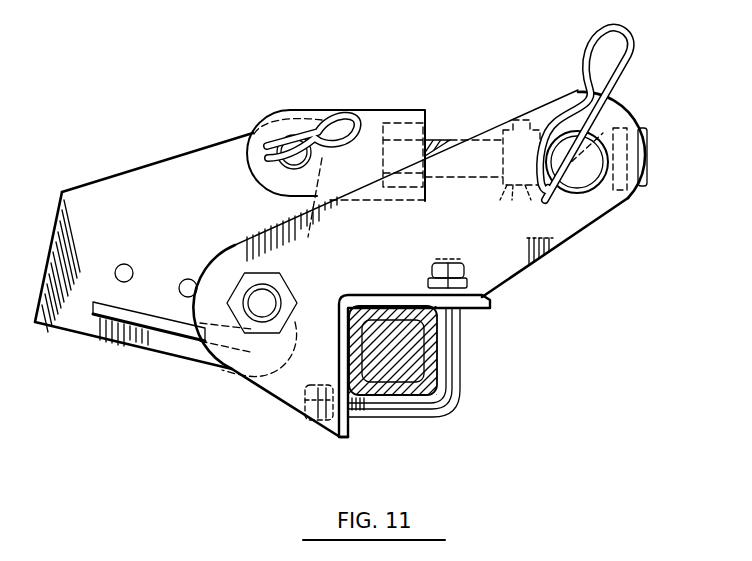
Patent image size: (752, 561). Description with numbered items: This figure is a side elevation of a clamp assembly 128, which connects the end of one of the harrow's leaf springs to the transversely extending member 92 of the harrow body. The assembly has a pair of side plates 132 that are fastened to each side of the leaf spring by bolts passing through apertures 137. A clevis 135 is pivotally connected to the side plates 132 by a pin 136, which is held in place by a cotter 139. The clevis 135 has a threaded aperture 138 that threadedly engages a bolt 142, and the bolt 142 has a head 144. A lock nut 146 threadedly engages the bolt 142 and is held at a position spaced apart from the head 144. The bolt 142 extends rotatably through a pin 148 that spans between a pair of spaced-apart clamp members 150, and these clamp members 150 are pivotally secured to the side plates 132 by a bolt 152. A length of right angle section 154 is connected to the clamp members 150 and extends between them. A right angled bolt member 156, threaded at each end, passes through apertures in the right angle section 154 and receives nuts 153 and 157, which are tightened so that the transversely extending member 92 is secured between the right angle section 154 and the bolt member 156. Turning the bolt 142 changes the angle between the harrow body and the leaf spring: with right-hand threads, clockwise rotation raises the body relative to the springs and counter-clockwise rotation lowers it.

The clamp assembly 128 is at (215, 93).
The side plates 132 is at (102, 215).
The clevis 135 is at (381, 110).
The pin 136 is at (294, 160).
The apertures 137 is at (188, 279).
The threaded aperture 138 is at (436, 140).
The cotter 139 is at (322, 118).
The bolt 142 is at (477, 168).
The head 144 is at (648, 148).
The lock nut 146 is at (530, 118).
The pin 148 is at (580, 168).
The clamp members 150 is at (548, 253).
The bolt 152 is at (261, 304).
The nut 153 is at (467, 279).
The right angle section 154 is at (384, 300).
The transversely extending member 92 is at (384, 318).
The right angled bolt member 156 is at (449, 407).
The nut 157 is at (289, 392).